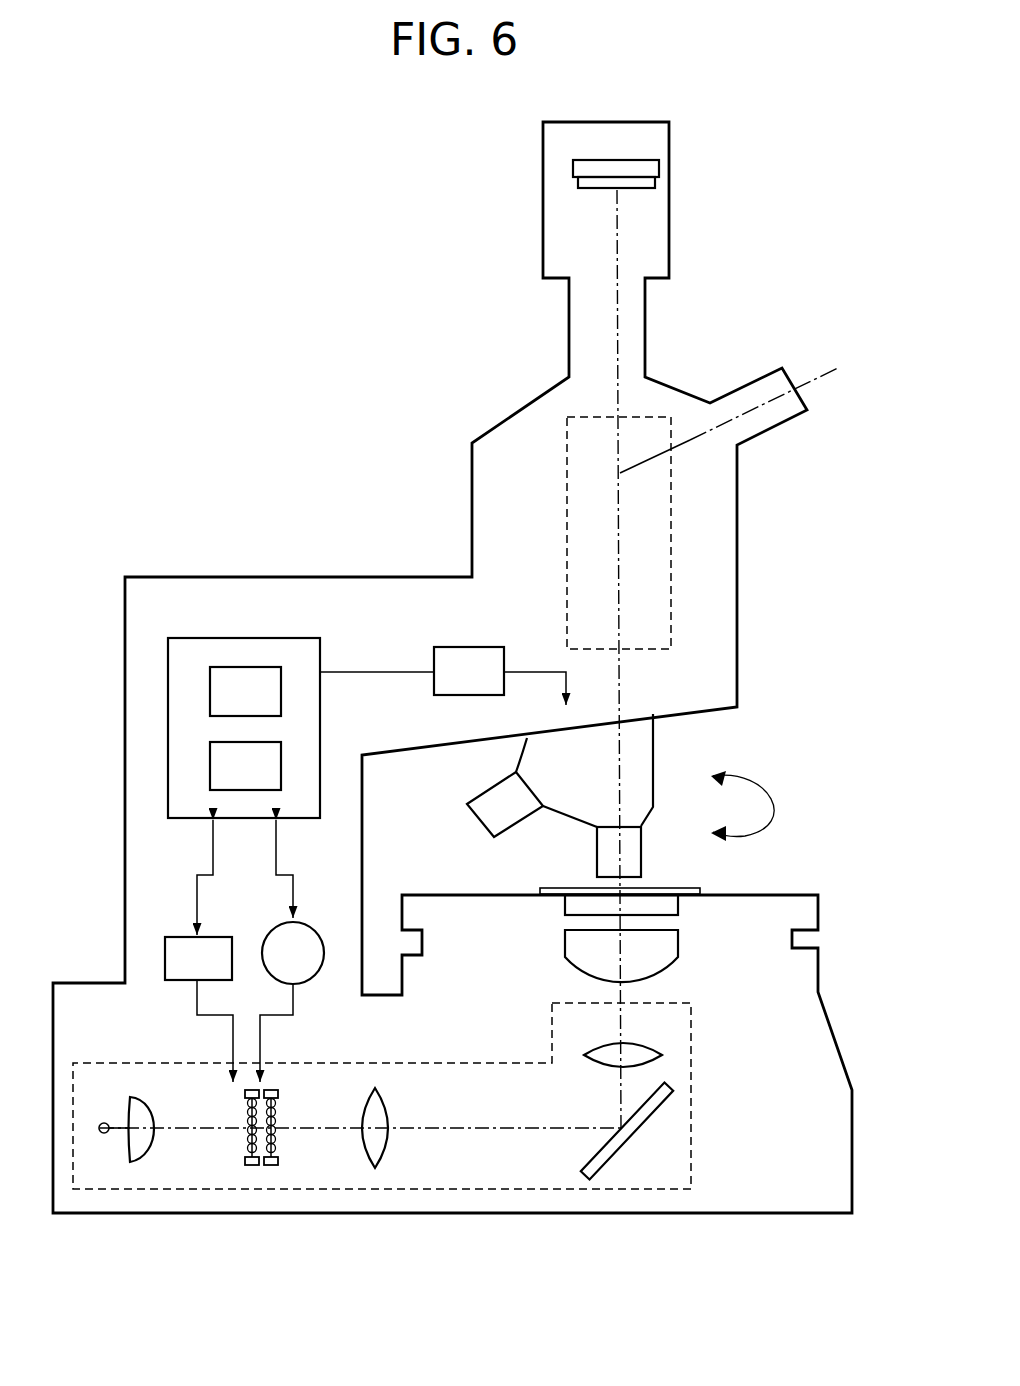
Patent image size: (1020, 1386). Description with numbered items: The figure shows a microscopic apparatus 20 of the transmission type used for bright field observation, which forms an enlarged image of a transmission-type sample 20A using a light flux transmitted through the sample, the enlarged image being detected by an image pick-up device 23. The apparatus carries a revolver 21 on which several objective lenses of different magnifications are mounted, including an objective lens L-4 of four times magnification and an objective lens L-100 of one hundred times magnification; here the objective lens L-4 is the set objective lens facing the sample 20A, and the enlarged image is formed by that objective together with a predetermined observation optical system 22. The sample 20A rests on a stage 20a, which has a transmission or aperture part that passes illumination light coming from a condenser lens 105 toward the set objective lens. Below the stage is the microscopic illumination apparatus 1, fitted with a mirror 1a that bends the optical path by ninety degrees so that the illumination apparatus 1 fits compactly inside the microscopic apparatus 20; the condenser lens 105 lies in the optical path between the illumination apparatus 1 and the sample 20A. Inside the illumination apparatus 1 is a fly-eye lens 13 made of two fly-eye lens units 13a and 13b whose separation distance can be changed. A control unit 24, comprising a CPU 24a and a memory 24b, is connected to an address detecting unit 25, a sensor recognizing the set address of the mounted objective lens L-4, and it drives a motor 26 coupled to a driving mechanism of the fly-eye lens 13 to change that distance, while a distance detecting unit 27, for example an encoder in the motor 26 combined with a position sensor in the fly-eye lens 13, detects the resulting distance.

The microscopic apparatus 20 is at (415, 130).
The image pick-up device 23 is at (640, 188).
The observation optical system 22 is at (647, 417).
The address detecting unit 25 is at (492, 647).
The control unit 24 is at (187, 728).
The CPU 24a is at (210, 772).
The memory 24b is at (210, 690).
The revolver 21 is at (655, 740).
The objective lens of 100 times magnification L-100 is at (463, 818).
The objective lens of 4 times magnification L-4 is at (597, 855).
The stage 20a is at (443, 884).
The sample 20A is at (665, 888).
The condenser lens 105 is at (583, 942).
The distance detecting unit 27 is at (222, 932).
The motor 26 is at (305, 924).
The fly-eye lens 13 is at (269, 1193).
The fly-eye lens unit 13a is at (244, 1152).
The fly-eye lens unit 13b is at (279, 1140).
The microscopic illumination apparatus 1 is at (380, 1192).
The mirror 1a is at (618, 1152).